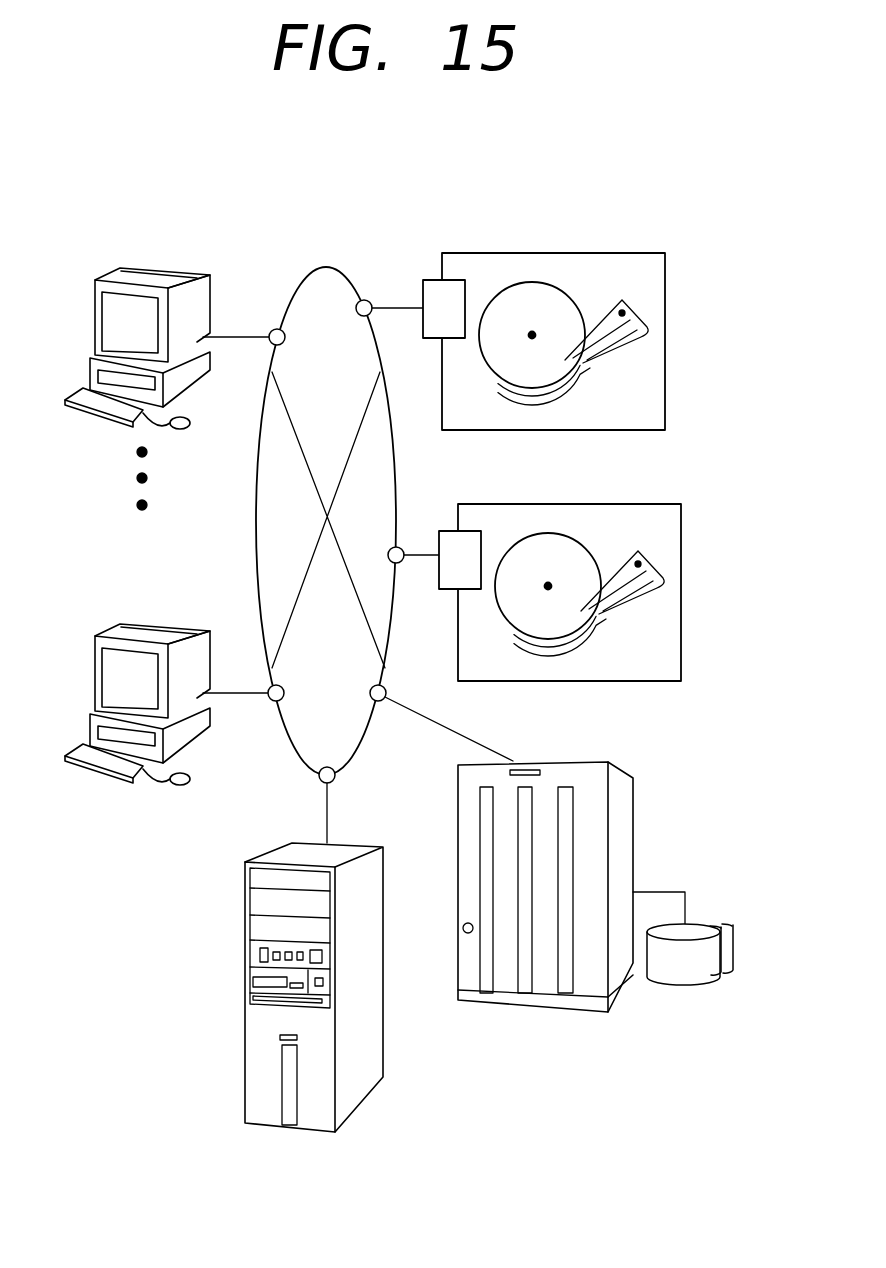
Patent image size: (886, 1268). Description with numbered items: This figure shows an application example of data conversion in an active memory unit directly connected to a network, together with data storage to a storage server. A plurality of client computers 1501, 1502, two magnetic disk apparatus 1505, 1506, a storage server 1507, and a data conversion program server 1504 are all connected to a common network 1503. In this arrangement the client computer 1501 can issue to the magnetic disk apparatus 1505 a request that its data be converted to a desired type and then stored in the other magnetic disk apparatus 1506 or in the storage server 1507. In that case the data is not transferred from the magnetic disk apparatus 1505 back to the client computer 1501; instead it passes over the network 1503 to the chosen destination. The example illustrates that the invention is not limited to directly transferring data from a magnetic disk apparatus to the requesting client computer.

The client computer 1501 is at (142, 267).
The client computer 1502 is at (142, 624).
The network 1503 is at (323, 266).
The data conversion program server 1504 is at (245, 942).
The magnetic disk apparatus 1505 is at (542, 252).
The magnetic disk apparatus 1506 is at (682, 567).
The storage server 1507 is at (635, 800).